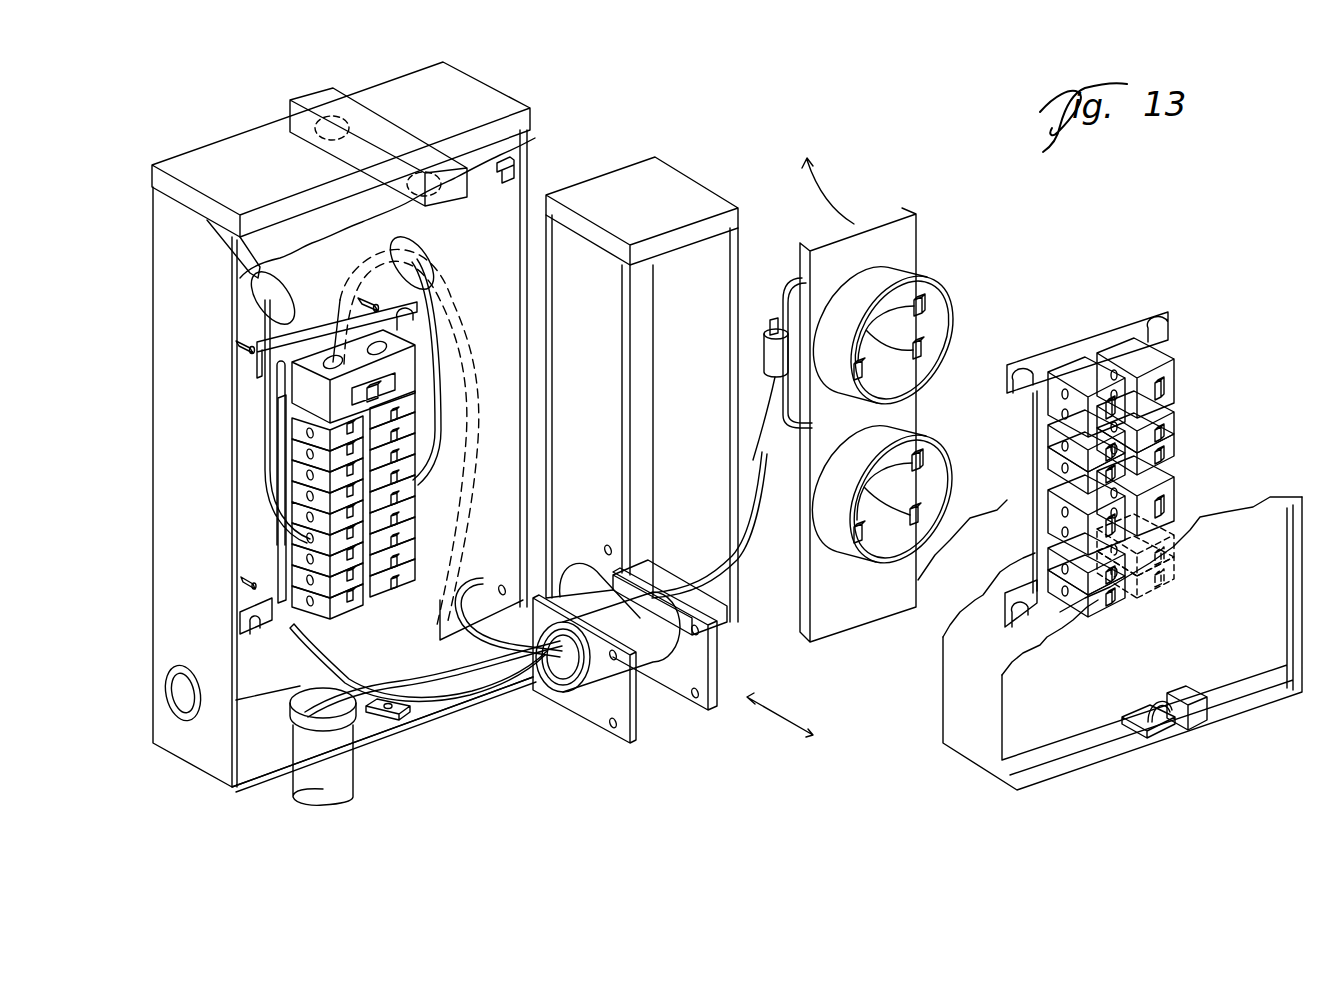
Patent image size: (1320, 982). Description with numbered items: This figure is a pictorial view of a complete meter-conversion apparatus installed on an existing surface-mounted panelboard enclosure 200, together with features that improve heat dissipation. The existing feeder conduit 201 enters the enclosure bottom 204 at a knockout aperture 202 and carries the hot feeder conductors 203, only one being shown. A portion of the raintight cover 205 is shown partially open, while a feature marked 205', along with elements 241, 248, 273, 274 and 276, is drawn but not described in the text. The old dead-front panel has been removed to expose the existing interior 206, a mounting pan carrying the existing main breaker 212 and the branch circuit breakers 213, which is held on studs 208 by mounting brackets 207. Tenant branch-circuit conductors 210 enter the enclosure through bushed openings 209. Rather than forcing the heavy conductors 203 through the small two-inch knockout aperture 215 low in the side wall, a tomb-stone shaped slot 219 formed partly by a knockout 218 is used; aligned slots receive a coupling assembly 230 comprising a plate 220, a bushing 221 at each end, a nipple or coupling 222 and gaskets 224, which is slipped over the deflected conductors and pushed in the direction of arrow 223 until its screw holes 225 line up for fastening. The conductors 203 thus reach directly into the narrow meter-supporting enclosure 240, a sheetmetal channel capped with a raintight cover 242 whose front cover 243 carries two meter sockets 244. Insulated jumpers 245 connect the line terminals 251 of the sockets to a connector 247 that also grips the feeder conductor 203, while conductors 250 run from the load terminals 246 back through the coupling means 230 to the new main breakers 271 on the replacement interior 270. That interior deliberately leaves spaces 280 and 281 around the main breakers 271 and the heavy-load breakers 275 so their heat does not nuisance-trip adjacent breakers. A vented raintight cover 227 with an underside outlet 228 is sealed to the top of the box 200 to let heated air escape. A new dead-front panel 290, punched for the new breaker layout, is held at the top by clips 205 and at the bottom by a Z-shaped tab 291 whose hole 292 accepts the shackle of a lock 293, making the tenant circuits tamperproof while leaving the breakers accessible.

The panelboard enclosure 200 is at (157, 755).
The feeder conduit 201 is at (291, 793).
The aperture 202 is at (300, 734).
The hot feeder conductors 203 is at (462, 332).
The enclosure bottom 204 is at (422, 720).
The raintight cover 205 is at (311, 177).
The lid latch 205' is at (555, 146).
The interior 206 is at (280, 546).
The mounting brackets 207 is at (257, 366).
The studs 208 is at (240, 343).
The bushed openings 209 is at (258, 300).
The tenant branch-circuit conductor 210 is at (296, 412).
The main breaker 212 is at (300, 382).
The branch circuit breakers 213 is at (310, 640).
The knockout aperture 215 is at (168, 700).
The knockout 218 is at (486, 580).
The tomb-stone shaped slot 219 is at (508, 630).
The plate 220 is at (634, 737).
The bushing 221 is at (575, 700).
The nipple or coupling 222 is at (654, 655).
The arrow 223 is at (787, 720).
The gaskets 224 is at (636, 723).
The screw holes 225 is at (330, 117).
The raintight cover 227 is at (330, 92).
The outlet 228 is at (414, 170).
The coupling assembly 230 is at (733, 670).
The meter-supporting enclosure 240 is at (688, 155).
The side wall 241 is at (738, 262).
The raintight cover 242 is at (735, 206).
The front cover 243 is at (935, 218).
The meter sockets 244 is at (950, 311).
The insulated jumpers 245 is at (777, 282).
The load terminals 246 is at (931, 346).
The connector 247 is at (764, 343).
The sensor housing 248 is at (764, 366).
The conductors 250 is at (763, 500).
The line terminals 251 is at (922, 301).
The replacement interior 270 is at (1190, 384).
The main breakers 271 is at (1170, 362).
The relay 273 is at (1170, 438).
The relay 274 is at (1170, 458).
The breakers 275 is at (1165, 486).
The relay 276 is at (1170, 538).
The spaces 280 is at (1163, 418).
The spaces 281 is at (1060, 486).
The dead-front panel 290 is at (1285, 497).
The Z-shaped tab 291 is at (396, 720).
The hole 292 is at (1152, 712).
The lock 293 is at (1193, 690).